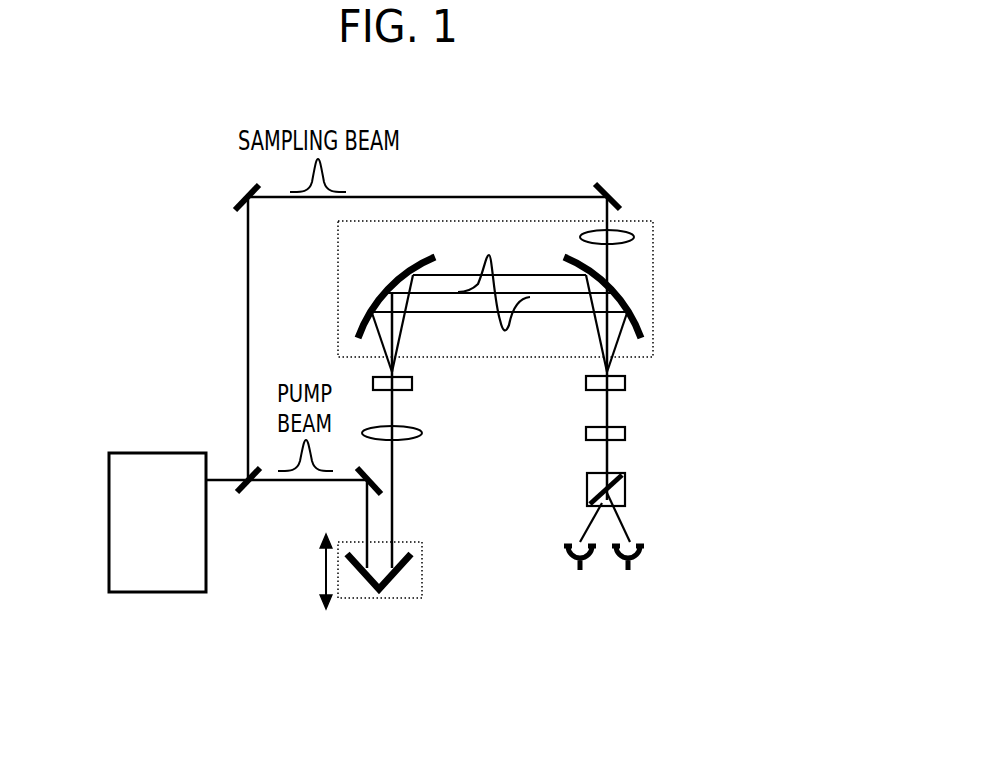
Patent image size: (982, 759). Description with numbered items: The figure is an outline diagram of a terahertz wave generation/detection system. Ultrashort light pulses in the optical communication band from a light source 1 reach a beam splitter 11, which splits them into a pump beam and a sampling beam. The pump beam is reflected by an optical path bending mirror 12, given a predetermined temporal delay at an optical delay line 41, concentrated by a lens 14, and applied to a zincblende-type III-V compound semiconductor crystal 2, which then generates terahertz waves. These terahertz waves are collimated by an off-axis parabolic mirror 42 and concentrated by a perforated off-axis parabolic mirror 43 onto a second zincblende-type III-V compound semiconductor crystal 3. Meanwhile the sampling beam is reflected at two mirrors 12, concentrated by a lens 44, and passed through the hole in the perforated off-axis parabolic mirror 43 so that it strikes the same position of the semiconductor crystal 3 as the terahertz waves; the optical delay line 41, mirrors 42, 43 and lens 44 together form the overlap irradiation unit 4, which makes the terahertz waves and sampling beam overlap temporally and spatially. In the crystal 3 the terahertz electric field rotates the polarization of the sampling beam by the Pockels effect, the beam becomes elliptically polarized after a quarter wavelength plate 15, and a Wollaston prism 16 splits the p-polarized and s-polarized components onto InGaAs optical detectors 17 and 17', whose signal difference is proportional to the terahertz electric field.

The light source 1 is at (138, 537).
The zincblende-type III-V compound semiconductor crystal 2 is at (412, 384).
The zincblende-type III-V compound semiconductor crystal 3 is at (617, 382).
The overlap irradiation unit 4 is at (500, 294).
The beam splitter 11 is at (244, 490).
The optical path bending mirror 12 is at (233, 200).
The lens 14 is at (420, 434).
The quarter wavelength plate 15 is at (617, 433).
The Wollaston prism 16 is at (625, 490).
The InGaAs optical detector 17 is at (554, 575).
The InGaAs optical detector 17' is at (674, 575).
The optical delay line 41 is at (395, 575).
The off-axis parabolic mirror 42 is at (373, 296).
The perforated off-axis parabolic mirror 43 is at (616, 303).
The lens 44 is at (618, 238).